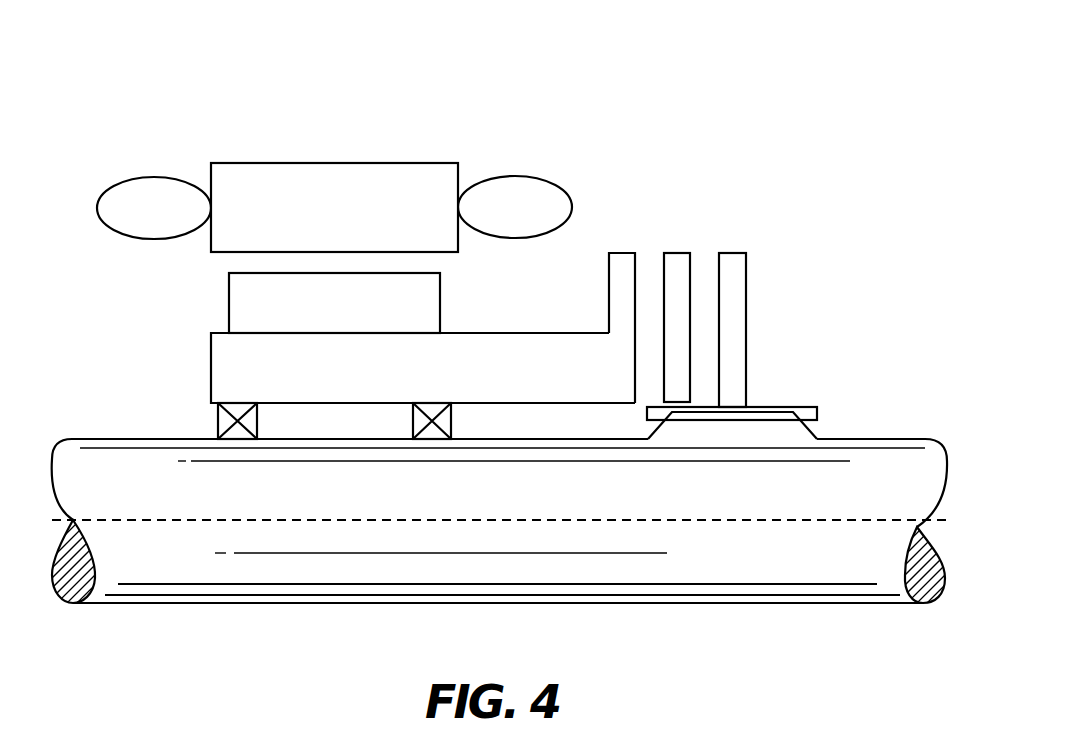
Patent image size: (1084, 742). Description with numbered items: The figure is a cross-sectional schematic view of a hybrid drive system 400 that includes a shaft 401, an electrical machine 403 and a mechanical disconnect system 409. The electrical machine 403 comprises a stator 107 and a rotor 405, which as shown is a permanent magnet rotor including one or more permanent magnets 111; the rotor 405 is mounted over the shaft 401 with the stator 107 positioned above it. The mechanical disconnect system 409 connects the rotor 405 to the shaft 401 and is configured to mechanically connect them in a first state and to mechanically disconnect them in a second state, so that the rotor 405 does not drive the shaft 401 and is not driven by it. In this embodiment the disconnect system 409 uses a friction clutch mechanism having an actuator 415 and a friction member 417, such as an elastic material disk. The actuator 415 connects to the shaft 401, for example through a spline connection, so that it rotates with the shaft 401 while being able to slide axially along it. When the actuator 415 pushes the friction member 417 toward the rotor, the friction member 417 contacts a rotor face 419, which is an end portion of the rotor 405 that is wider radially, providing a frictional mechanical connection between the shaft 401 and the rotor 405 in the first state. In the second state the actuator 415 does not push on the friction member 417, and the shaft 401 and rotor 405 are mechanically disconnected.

The hybrid drive system 400 is at (824, 106).
The shaft 401 is at (738, 578).
The electrical machine 403 is at (172, 133).
The stator 107 is at (300, 177).
The rotor 405 is at (225, 371).
The permanent magnets 111 is at (354, 316).
The mechanical disconnect system 409 is at (679, 226).
The actuator 415 is at (728, 280).
The friction member 417 is at (680, 358).
The rotor face 419 is at (634, 302).